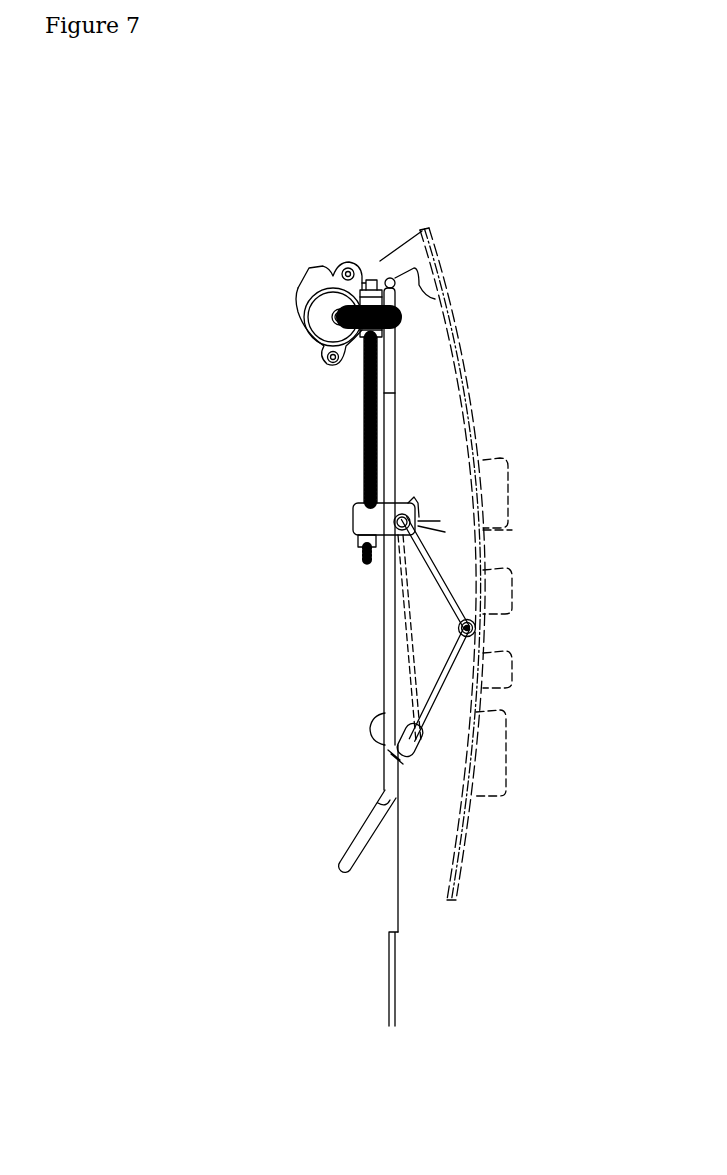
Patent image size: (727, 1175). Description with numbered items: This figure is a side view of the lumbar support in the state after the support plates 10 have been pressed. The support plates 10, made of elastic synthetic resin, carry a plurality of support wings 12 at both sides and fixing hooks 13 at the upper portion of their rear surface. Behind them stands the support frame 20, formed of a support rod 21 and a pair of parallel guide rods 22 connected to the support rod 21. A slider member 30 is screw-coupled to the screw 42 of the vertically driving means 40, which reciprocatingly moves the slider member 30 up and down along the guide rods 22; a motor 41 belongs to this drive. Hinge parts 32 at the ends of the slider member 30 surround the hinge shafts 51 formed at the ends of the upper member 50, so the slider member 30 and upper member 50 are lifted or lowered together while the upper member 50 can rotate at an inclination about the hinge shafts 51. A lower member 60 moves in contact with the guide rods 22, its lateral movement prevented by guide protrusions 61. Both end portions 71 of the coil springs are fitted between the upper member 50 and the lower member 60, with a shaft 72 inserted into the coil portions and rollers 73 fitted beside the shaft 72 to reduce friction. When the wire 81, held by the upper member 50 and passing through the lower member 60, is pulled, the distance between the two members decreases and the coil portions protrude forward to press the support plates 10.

The support plates 10 is at (495, 422).
The support wings 12 is at (500, 600).
The fixing hooks 13 is at (406, 256).
The support frame 20 is at (341, 890).
The support rod 21 is at (377, 272).
The guide rods 22 is at (384, 700).
The slider member 30 is at (352, 516).
The hinge parts 32 is at (412, 510).
The vertically driving means 40 is at (318, 222).
The motor 41 is at (318, 312).
The screw 42 is at (360, 396).
The upper member 50 is at (445, 532).
The hinge shafts 51 is at (440, 521).
The lower member 60 is at (395, 752).
The guide protrusions 61 is at (378, 737).
The end portions of the coil springs 71 is at (420, 570).
The shaft 72 is at (480, 628).
The rollers 73 is at (450, 618).
The wire 81 is at (398, 992).